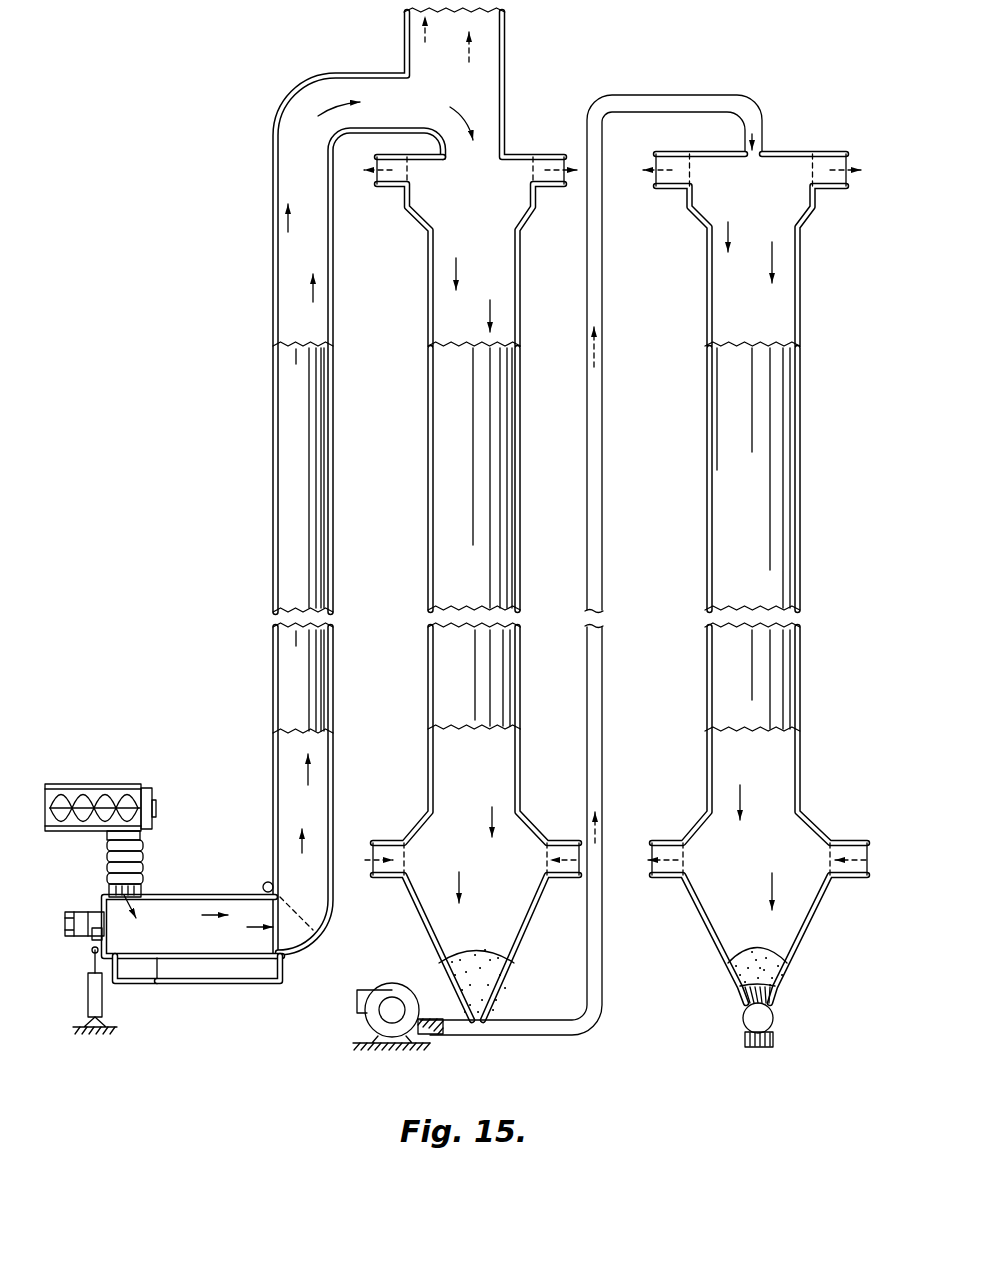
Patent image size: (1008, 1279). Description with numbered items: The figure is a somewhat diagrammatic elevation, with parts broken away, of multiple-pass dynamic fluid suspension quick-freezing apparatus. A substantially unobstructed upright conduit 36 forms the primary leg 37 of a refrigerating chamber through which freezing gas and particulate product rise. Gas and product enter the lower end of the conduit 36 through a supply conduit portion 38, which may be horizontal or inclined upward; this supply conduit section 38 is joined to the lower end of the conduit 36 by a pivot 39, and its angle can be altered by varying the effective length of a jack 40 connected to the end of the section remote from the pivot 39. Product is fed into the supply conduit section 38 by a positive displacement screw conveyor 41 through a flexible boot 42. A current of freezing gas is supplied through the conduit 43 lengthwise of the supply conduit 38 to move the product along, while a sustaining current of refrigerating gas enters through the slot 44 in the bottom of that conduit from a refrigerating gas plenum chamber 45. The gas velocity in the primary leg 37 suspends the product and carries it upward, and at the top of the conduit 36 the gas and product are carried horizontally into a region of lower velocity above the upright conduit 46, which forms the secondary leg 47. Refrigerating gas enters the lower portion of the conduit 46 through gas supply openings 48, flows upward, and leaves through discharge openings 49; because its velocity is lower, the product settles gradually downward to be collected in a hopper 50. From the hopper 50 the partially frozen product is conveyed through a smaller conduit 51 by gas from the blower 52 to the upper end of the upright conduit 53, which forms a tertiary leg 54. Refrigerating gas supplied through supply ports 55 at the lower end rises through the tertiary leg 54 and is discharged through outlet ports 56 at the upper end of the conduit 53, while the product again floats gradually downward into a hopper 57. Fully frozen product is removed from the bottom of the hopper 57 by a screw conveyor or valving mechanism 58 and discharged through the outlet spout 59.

The upright conduit 36 is at (273, 450).
The primary leg 37 is at (296, 786).
The supply conduit portion 38 is at (231, 896).
The pivot 39 is at (266, 882).
The jack 40 is at (88, 994).
The screw conveyor 41 is at (77, 784).
The flexible boot 42 is at (143, 858).
The conduit 43 is at (78, 912).
The slot 44 is at (157, 962).
The refrigerating gas plenum chamber 45 is at (258, 975).
The upright conduit 46 is at (428, 407).
The secondary leg 47 is at (462, 300).
The gas supply openings 48 is at (383, 843).
The discharge openings 49 is at (390, 186).
The hopper 50 is at (478, 967).
The smaller conduit 51 is at (604, 286).
The blower 52 is at (392, 989).
The upright conduit 53 is at (704, 412).
The tertiary leg 54 is at (745, 303).
The supply ports 55 is at (663, 843).
The outlet ports 56 is at (673, 188).
The hopper 57 is at (780, 965).
The valving mechanism 58 is at (742, 1018).
The outlet spout 59 is at (745, 1040).